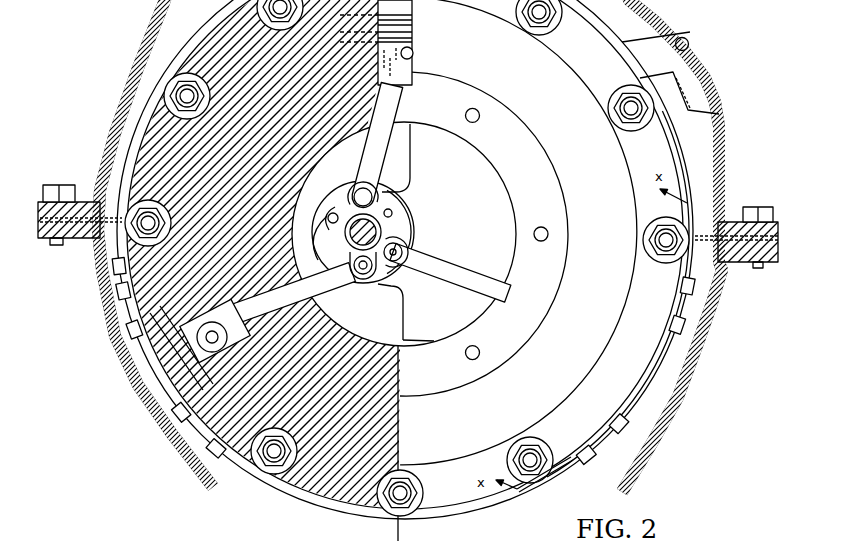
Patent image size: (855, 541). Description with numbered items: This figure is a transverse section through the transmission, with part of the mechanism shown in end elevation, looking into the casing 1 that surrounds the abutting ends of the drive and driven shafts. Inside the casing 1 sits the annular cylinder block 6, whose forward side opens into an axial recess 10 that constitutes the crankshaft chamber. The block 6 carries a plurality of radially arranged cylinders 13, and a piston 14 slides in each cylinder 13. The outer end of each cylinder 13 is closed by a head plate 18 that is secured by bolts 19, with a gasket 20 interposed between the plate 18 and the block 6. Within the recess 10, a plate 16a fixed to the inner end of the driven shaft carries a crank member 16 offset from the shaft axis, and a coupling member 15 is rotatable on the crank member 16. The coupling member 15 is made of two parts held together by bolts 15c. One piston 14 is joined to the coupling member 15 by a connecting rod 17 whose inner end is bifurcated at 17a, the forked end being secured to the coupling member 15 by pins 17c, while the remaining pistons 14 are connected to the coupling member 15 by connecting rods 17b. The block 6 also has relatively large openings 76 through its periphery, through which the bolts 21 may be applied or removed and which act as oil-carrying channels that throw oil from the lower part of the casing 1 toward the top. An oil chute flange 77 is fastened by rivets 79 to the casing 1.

The casing 1 is at (684, 410).
The cylinder block 6 is at (485, 507).
The axial recess 10 is at (434, 347).
The cylinder 13 is at (303, 303).
The piston 14 is at (403, 67).
The coupling member 15 is at (403, 233).
The bolts 15c is at (396, 211).
The crank member 16 is at (347, 274).
The plate 16a is at (427, 310).
The connecting rod 17 is at (299, 267).
The bifurcated end 17a is at (336, 226).
The connecting rods 17b is at (375, 160).
The pins 17c is at (359, 258).
The head plate 18 is at (203, 443).
The bolts 19 is at (182, 422).
The gasket 20 is at (233, 457).
The bolts 21 is at (627, 113).
The opening 76 is at (650, 245).
The flange 77 is at (699, 95).
The rivets 79 is at (689, 39).